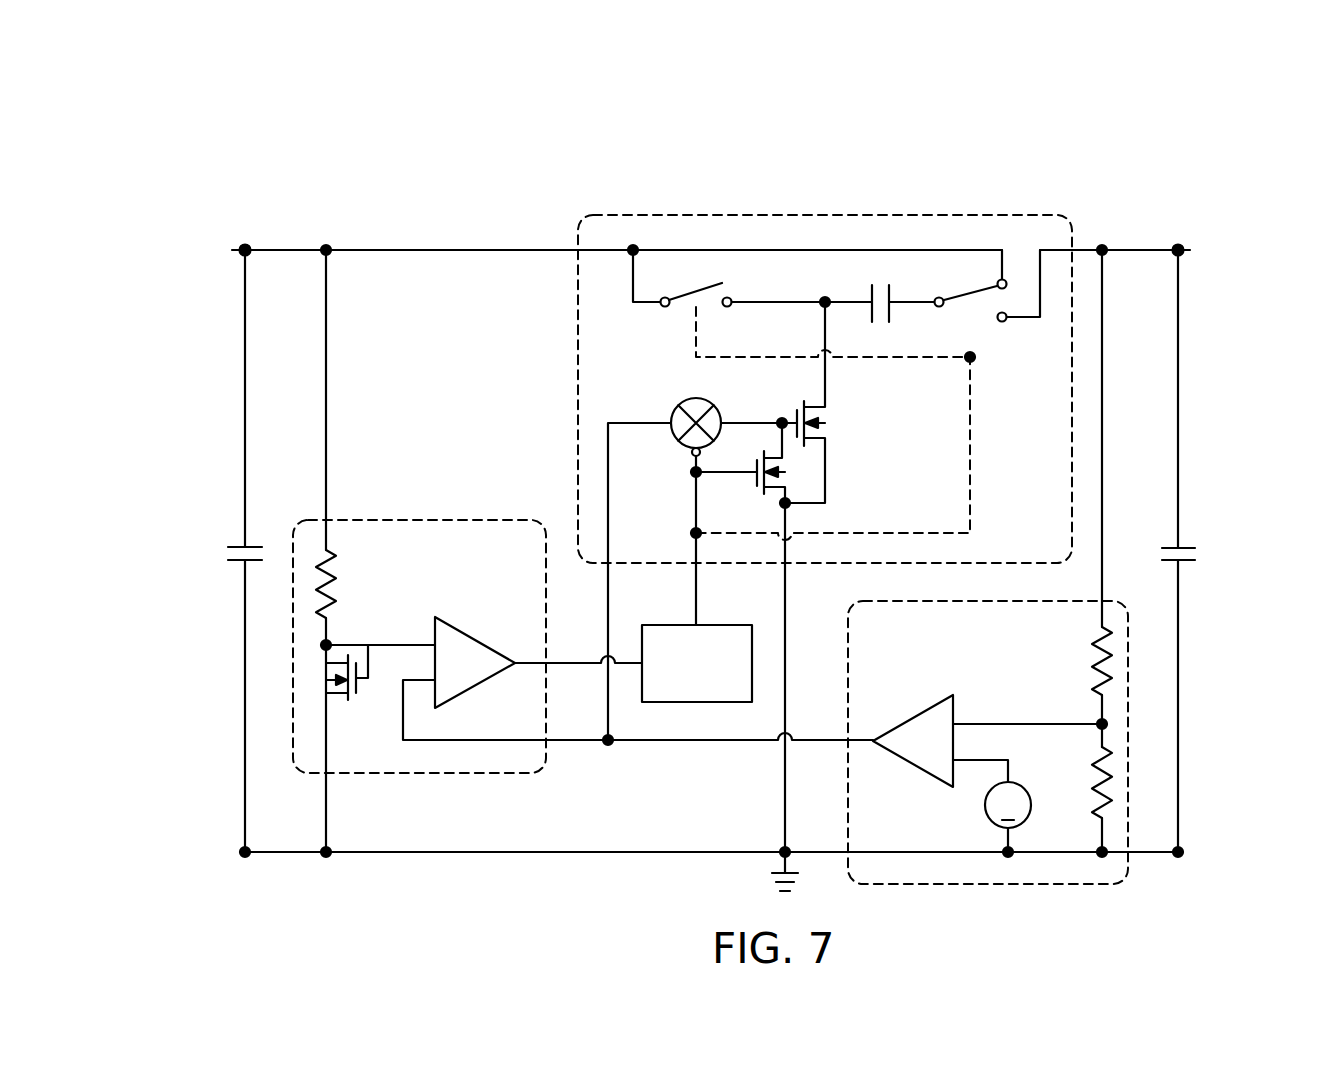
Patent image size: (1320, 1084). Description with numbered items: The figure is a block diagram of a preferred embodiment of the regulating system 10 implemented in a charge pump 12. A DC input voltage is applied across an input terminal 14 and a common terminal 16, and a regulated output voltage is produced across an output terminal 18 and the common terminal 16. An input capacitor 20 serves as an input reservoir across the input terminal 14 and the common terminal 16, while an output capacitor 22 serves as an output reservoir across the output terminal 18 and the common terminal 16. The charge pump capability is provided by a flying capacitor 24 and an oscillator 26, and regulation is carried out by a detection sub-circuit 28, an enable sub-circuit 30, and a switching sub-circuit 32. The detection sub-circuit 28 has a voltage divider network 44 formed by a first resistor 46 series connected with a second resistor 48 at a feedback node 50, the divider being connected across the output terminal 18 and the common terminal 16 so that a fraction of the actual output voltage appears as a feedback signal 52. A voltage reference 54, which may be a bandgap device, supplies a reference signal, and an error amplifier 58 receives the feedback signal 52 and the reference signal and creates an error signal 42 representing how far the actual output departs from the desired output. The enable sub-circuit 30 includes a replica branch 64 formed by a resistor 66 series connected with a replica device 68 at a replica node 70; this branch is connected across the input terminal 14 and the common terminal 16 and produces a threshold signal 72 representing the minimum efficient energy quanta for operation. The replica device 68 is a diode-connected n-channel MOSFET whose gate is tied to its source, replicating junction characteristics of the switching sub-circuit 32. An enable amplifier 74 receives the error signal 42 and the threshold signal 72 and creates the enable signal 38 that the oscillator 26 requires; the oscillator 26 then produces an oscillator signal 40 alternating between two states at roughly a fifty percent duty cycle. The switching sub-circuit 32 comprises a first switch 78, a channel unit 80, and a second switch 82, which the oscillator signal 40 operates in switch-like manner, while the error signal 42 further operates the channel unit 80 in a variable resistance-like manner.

The regulating system 10 is at (1119, 195).
The charge pump 12 is at (390, 212).
The input terminal 14 is at (230, 250).
The common terminal 16 is at (700, 855).
The output terminal 18 is at (1192, 250).
The input capacitor 20 is at (242, 562).
The output capacitor 22 is at (1185, 547).
The flying capacitor 24 is at (890, 312).
The oscillator 26 is at (697, 664).
The detection sub-circuit 28 is at (1012, 885).
The enable sub-circuit 30 is at (424, 519).
The switching sub-circuit 32 is at (823, 215).
The enable signal 38 is at (567, 662).
The oscillator signal 40 is at (698, 586).
The error signal 42 is at (702, 743).
The voltage divider network 44 is at (1119, 612).
The first resistor 46 is at (1097, 660).
The second resistor 48 is at (1097, 780).
The feedback node 50 is at (1098, 722).
The feedback signal 52 is at (1003, 723).
The voltage reference 54 is at (985, 807).
The error amplifier 58 is at (913, 741).
The replica branch 64 is at (312, 548).
The resistor 66 is at (337, 568).
The replica device 68 is at (358, 681).
The replica node 70 is at (330, 642).
The threshold signal 72 is at (383, 643).
The enable amplifier 74 is at (475, 662).
The first switch 78 is at (672, 322).
The channel unit 80 is at (840, 465).
The second switch 82 is at (988, 327).